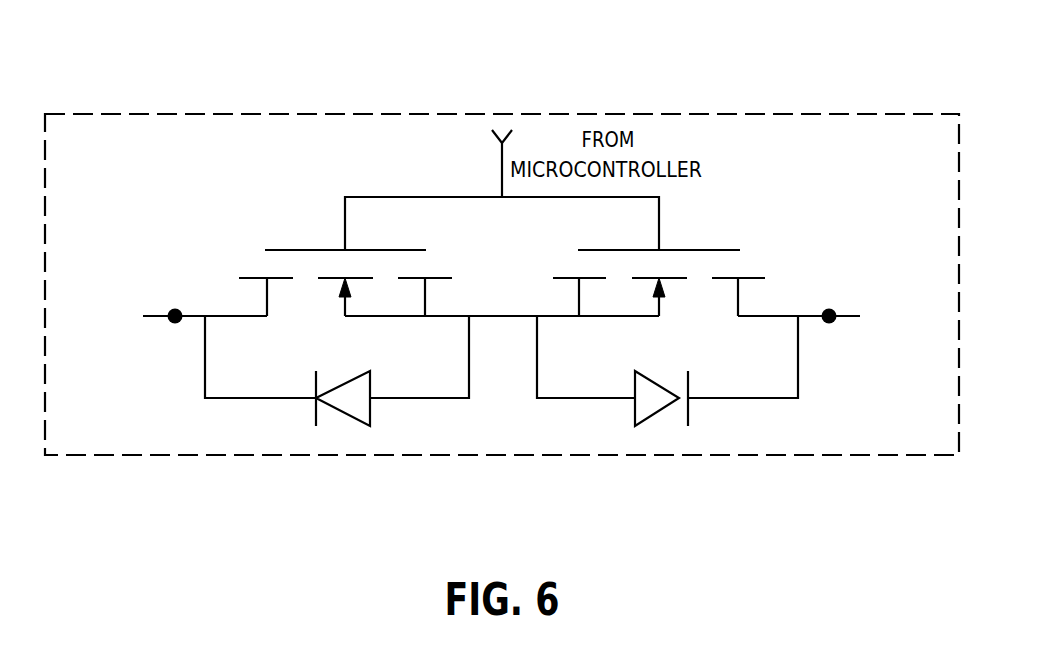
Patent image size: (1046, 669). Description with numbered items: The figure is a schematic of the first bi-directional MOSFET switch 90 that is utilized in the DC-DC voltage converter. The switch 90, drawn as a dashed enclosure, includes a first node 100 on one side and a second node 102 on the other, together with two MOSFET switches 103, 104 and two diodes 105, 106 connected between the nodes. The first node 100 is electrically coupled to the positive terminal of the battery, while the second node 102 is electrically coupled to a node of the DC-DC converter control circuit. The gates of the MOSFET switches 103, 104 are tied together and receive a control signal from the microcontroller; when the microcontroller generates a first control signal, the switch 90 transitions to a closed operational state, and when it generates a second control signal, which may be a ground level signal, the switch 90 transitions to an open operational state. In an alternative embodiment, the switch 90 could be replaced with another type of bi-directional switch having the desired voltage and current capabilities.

The first bi-directional MOSFET switch 90 is at (795, 114).
The first node 100 is at (177, 324).
The second node 102 is at (829, 323).
The MOSFET switch 103 is at (304, 250).
The MOSFET switch 104 is at (700, 250).
The diode 105 is at (345, 410).
The diode 106 is at (658, 410).